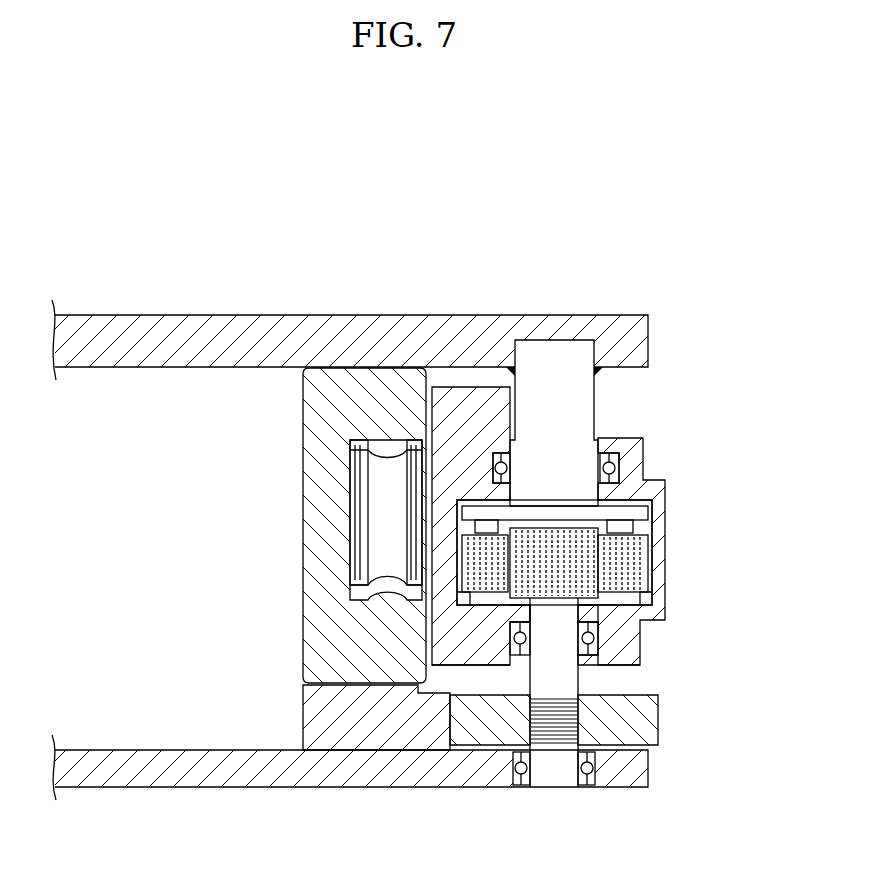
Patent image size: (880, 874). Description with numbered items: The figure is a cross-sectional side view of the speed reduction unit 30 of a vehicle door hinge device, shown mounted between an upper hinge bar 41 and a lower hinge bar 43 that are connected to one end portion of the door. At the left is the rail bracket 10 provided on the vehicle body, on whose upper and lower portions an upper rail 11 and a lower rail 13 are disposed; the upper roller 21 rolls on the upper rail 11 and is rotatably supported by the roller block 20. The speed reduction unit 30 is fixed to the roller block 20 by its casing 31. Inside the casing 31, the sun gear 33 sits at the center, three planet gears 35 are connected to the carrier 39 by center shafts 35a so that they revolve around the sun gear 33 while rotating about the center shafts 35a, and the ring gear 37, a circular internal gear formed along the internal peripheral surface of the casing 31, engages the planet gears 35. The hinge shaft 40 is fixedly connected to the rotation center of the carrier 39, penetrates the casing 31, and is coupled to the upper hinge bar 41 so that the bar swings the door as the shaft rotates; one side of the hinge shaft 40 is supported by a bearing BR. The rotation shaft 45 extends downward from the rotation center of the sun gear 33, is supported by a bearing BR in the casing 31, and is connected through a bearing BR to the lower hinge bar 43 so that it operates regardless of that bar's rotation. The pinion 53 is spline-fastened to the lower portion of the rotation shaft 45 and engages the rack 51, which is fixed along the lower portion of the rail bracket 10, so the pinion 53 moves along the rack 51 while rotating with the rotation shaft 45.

The rail bracket 10 is at (318, 515).
The upper rail 11 is at (388, 465).
The lower rail 13 is at (382, 592).
The roller block 20 is at (465, 395).
The upper roller 21 is at (382, 548).
The speed reduction unit 30 is at (645, 463).
The casing 31 is at (645, 541).
The sun gear 33 is at (577, 580).
The planet gears 35 is at (625, 562).
The center shafts 35a is at (630, 514).
The ring gear 37 is at (645, 600).
The carrier 39 is at (580, 512).
The hinge shaft 40 is at (580, 392).
The upper hinge bar 41 is at (325, 335).
The lower hinge bar 43 is at (321, 770).
The rotation shaft 45 is at (565, 668).
The rack 51 is at (416, 735).
The pinion 53 is at (650, 718).
The bearing BR is at (622, 462).